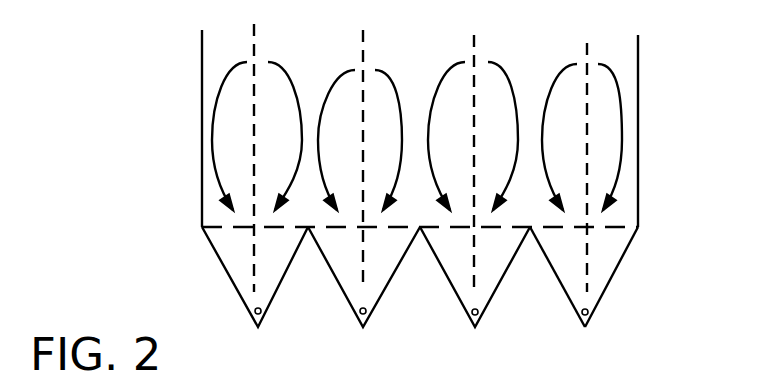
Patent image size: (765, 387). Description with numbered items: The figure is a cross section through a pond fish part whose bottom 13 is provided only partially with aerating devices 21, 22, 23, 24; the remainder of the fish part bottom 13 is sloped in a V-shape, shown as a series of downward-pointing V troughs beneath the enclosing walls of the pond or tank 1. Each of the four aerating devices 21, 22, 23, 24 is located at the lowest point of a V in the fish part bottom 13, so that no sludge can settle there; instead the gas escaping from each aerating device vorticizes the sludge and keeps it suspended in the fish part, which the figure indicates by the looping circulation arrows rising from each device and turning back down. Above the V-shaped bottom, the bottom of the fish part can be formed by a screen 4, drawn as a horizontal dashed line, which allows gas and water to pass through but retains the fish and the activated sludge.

The tank 1 is at (618, 46).
The screen 4 is at (632, 227).
The fish part bottom 13 is at (621, 258).
The aerating device 21 is at (261, 314).
The aerating device 22 is at (366, 314).
The aerating device 23 is at (479, 316).
The aerating device 24 is at (589, 316).